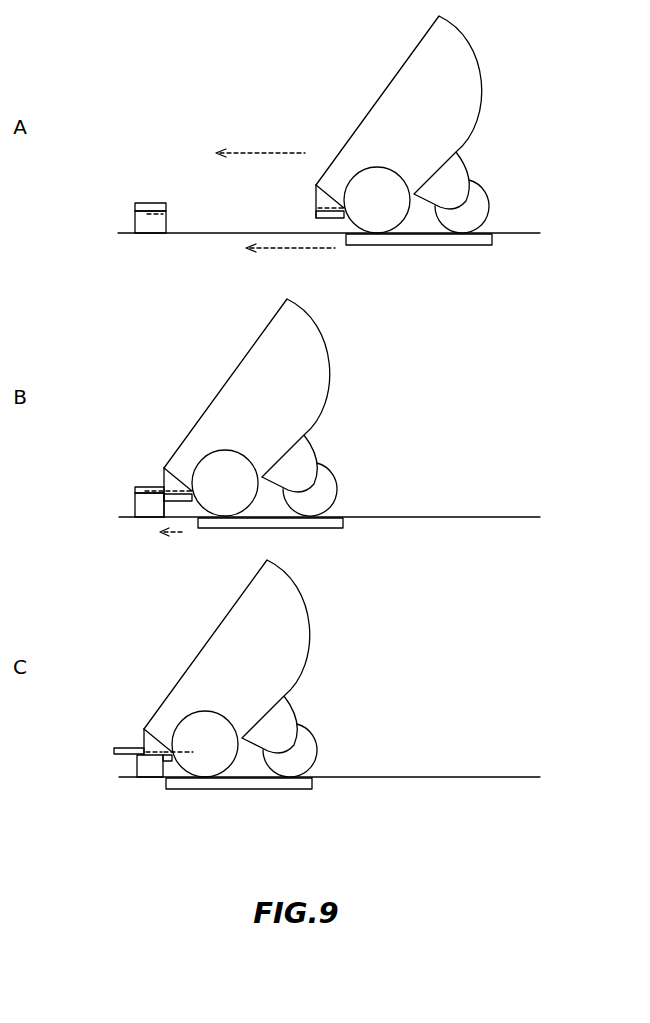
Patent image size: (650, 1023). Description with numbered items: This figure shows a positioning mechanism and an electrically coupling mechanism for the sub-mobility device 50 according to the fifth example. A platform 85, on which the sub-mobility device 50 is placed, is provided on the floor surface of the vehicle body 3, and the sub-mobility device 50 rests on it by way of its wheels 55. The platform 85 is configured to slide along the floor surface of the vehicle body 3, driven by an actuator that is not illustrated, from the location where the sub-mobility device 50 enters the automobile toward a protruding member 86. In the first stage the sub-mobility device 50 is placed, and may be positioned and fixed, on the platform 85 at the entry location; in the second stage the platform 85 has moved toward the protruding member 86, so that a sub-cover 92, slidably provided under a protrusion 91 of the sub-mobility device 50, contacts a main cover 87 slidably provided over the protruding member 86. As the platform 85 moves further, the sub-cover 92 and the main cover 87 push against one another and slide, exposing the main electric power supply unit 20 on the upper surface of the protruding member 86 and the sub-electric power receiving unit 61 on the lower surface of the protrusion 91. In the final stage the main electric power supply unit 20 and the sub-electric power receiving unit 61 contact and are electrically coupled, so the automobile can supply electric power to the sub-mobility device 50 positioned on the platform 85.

The vehicle body 3 is at (502, 233).
The main electric power supply unit 20 is at (156, 220).
The sub-mobility device 50 is at (388, 84).
The wheels 55 is at (379, 207).
The sub-electric power receiving unit 61 is at (328, 205).
The platform 85 is at (428, 246).
The protruding member 86 is at (135, 218).
The main cover 87 is at (151, 203).
The protrusion 91 is at (315, 193).
The sub-cover 92 is at (326, 219).